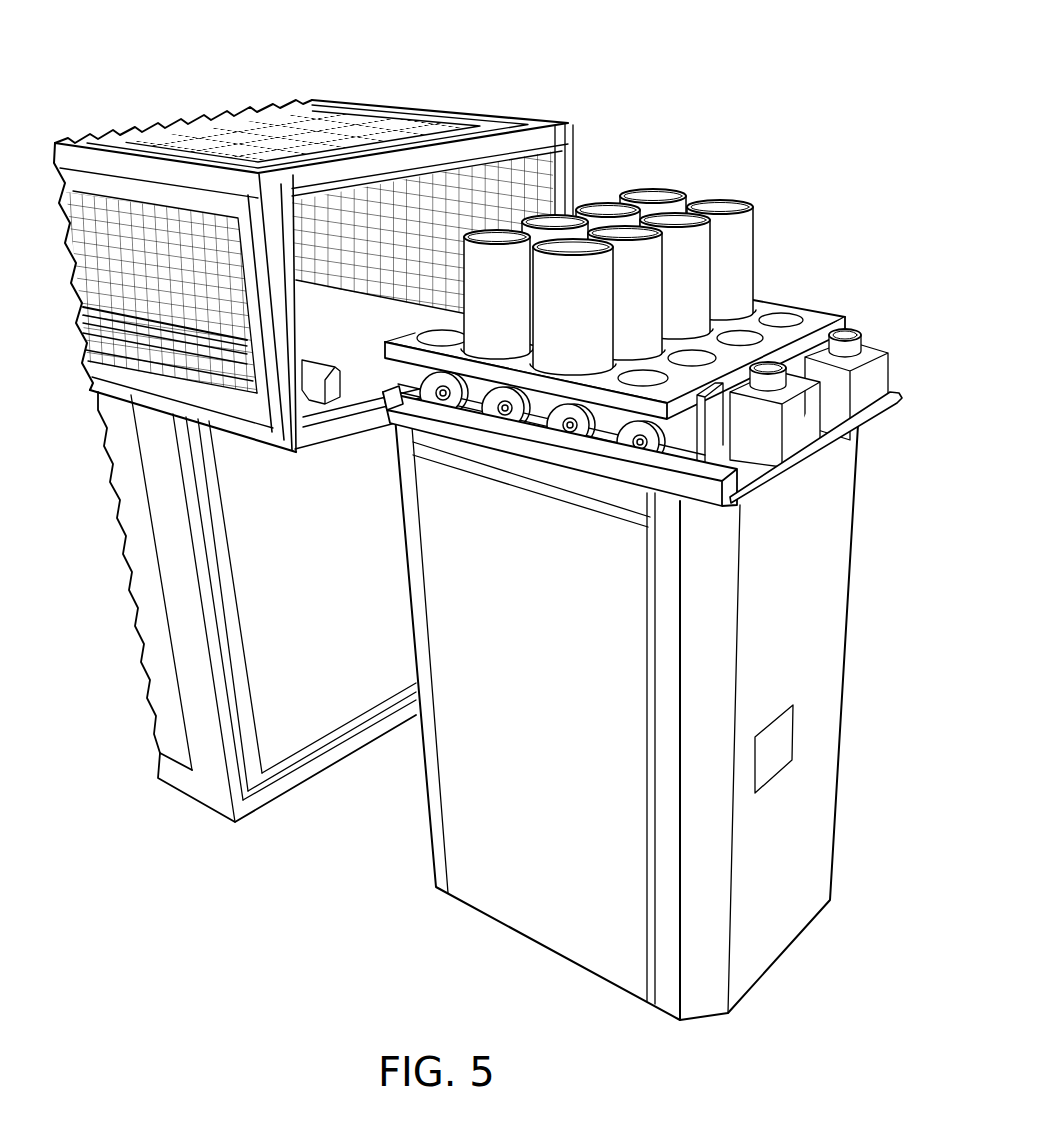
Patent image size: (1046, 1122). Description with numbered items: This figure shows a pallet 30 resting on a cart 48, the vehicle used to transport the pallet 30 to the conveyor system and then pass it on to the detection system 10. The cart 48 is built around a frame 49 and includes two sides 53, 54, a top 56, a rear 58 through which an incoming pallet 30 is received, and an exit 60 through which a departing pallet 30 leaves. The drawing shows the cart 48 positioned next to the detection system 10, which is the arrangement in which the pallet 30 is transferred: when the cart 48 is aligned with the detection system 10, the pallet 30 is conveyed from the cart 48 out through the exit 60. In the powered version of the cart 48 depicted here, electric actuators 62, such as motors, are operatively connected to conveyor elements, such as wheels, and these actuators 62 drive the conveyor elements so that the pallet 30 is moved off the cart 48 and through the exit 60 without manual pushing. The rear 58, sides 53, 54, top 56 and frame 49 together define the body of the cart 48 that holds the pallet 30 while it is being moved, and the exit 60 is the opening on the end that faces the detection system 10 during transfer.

The detection system 10 is at (448, 97).
The pallet 30 is at (816, 321).
The cart 48 is at (786, 667).
The frame 49 is at (715, 832).
The side 53 is at (658, 787).
The side 54 is at (831, 723).
The top 56 is at (877, 348).
The rear 58 is at (846, 501).
The exit 60 is at (702, 178).
The electric actuators 62 is at (797, 477).